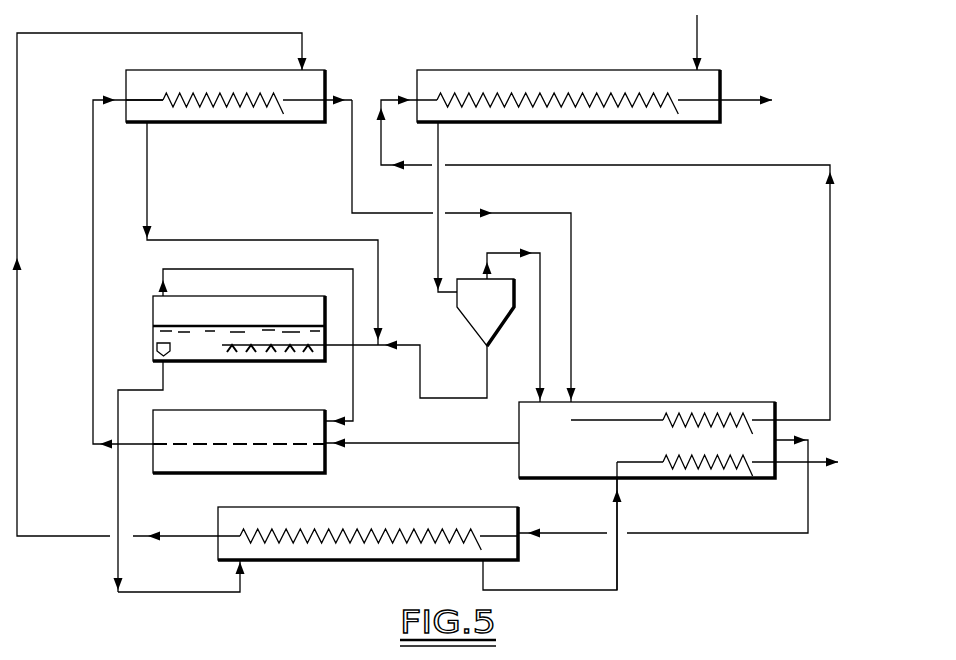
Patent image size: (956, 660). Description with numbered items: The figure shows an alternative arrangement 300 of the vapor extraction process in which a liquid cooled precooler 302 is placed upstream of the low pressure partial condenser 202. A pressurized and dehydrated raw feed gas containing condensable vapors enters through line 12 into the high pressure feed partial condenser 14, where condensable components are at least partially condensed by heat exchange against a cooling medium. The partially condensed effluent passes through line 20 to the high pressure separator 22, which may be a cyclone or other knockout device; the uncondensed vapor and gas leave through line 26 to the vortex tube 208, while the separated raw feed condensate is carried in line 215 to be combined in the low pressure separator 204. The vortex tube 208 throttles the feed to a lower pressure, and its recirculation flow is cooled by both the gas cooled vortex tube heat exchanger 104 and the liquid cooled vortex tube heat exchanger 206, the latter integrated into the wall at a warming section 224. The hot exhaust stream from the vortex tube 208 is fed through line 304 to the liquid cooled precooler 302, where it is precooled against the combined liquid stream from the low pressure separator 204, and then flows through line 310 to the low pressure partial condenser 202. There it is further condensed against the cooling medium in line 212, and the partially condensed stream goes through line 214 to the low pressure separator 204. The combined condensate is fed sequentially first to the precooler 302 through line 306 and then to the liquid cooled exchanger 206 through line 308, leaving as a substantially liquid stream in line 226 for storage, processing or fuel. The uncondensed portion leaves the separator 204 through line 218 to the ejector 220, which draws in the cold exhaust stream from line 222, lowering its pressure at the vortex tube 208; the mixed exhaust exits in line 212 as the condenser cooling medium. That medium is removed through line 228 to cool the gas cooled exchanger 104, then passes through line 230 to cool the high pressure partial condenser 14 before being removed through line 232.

The line 12 is at (693, 50).
The high pressure feed partial condenser 14 is at (497, 70).
The line 20 is at (440, 258).
The high pressure separator 22 is at (470, 268).
The line 26 is at (540, 338).
The gas cooled vortex tube heat exchanger 104 is at (685, 405).
The low pressure partial condenser 202 is at (152, 70).
The low pressure separator 204 is at (243, 296).
The liquid cooled vortex tube heat exchanger 206 is at (700, 462).
The vortex tube 208 is at (600, 480).
The line 212 is at (93, 170).
The line 214 is at (177, 240).
The line 215 is at (420, 378).
The line 218 is at (243, 269).
The ejector 220 is at (243, 410).
The line 222 is at (505, 445).
The warming section 224 is at (690, 440).
The line 226 is at (815, 455).
The line 228 is at (571, 275).
The line 230 is at (830, 240).
The line 232 is at (730, 100).
The alternative arrangement 300 is at (106, 574).
The liquid cooled precooler 302 is at (322, 507).
The line 304 is at (808, 533).
The line 306 is at (118, 497).
The line 308 is at (620, 517).
The line 310 is at (18, 298).